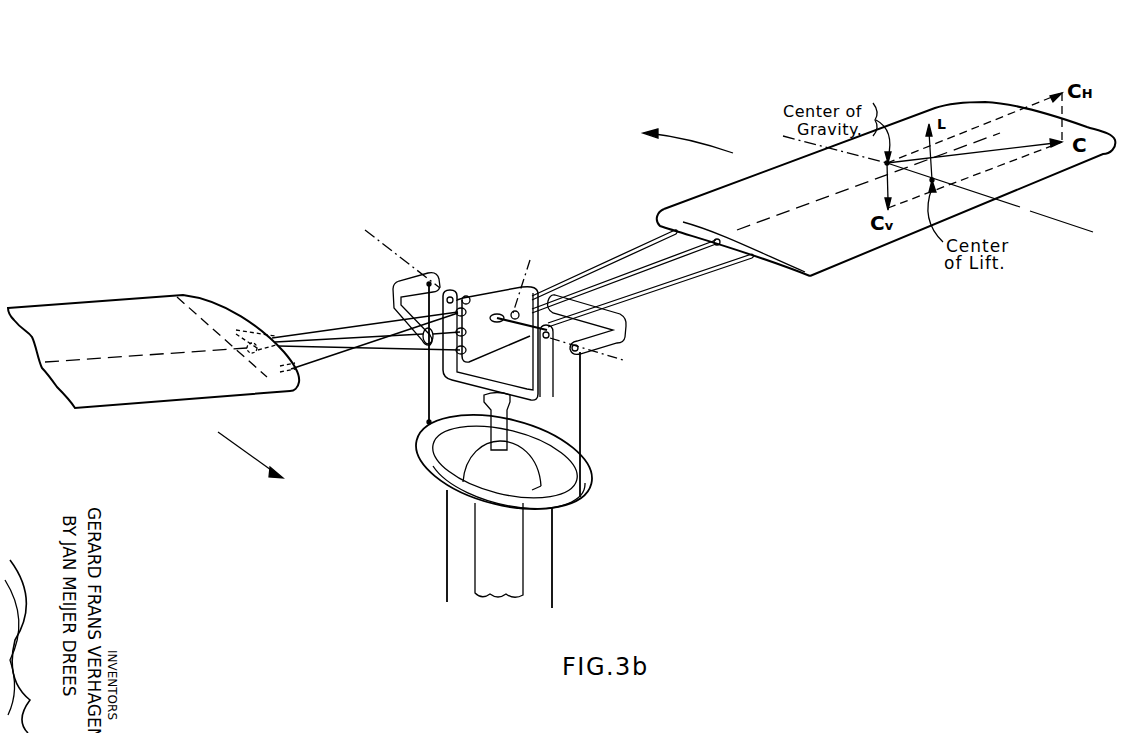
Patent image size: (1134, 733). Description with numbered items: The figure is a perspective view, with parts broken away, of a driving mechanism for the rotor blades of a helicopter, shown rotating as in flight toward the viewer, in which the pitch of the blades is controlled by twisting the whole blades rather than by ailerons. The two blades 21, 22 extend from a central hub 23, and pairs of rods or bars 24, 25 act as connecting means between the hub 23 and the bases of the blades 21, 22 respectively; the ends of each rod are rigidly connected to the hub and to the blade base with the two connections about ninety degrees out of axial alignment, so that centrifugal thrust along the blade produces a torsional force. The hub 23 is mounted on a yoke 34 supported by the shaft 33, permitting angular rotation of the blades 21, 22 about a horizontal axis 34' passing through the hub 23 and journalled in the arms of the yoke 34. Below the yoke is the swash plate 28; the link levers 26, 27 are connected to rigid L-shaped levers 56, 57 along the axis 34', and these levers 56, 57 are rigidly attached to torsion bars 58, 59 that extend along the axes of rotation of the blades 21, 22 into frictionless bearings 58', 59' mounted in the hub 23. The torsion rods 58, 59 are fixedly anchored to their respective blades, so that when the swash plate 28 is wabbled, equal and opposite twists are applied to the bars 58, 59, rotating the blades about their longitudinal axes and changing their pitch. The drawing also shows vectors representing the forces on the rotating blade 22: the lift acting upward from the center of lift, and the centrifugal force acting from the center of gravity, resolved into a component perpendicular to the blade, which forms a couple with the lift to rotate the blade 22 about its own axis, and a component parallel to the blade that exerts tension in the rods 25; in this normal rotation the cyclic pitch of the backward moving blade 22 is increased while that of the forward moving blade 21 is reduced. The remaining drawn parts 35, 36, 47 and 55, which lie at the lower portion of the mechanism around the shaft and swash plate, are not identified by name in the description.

The blade 21 is at (160, 400).
The blade 22 is at (848, 253).
The hub 23 is at (500, 290).
The rods or bars 24 is at (310, 358).
The rods or bars 25 is at (687, 279).
The link lever 26 is at (428, 398).
The link lever 27 is at (582, 395).
The swash plate 28 is at (570, 507).
The shaft 33 is at (490, 410).
The yoke 34 is at (508, 358).
The horizontal axis 34' is at (402, 249).
The drive shaft 35 is at (495, 595).
The dome 36 is at (478, 468).
The post 47 is at (447, 540).
The post 55 is at (553, 560).
The L-shaped lever 56 is at (403, 280).
The L-shaped lever 57 is at (624, 338).
The torsion bar 58 is at (375, 328).
The frictionless bearing 58' is at (482, 266).
The torsion bar 59 is at (626, 267).
The frictionless bearing 59' is at (529, 285).